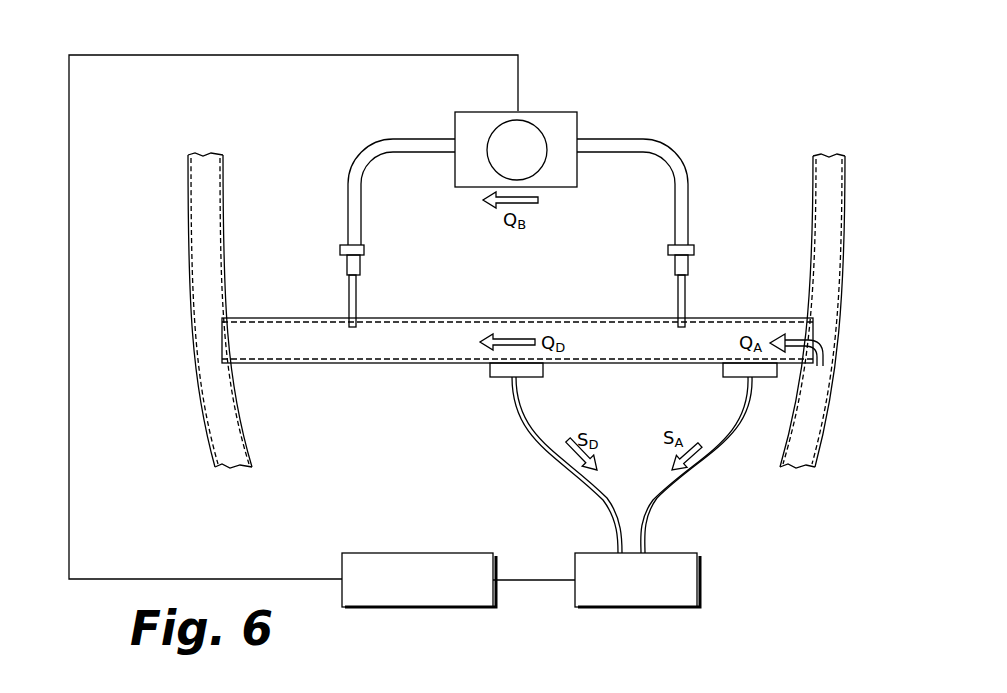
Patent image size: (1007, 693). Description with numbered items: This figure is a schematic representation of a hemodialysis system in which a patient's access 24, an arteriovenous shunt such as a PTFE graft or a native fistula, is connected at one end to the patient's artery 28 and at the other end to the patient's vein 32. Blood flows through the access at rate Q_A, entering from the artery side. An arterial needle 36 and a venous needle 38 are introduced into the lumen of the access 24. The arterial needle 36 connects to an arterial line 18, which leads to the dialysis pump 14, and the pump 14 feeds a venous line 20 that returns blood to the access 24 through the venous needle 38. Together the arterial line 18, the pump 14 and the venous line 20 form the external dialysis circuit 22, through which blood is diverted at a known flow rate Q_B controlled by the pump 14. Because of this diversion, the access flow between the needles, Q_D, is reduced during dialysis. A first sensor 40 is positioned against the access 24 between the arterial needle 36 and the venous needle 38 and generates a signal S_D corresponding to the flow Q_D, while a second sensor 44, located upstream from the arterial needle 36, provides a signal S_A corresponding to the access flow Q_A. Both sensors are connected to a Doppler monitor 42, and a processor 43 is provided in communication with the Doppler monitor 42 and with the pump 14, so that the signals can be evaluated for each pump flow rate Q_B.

The dialysis pump 14 is at (528, 111).
The external dialysis circuit 22 is at (656, 116).
The venous line 20 is at (368, 145).
The arterial line 18 is at (676, 150).
The artery 28 is at (808, 188).
The vein 32 is at (192, 390).
The venous needle 38 is at (358, 303).
The arterial needle 36 is at (677, 303).
The access 24 is at (380, 347).
The first sensor 40 is at (490, 372).
The second sensor 44 is at (718, 372).
The processor 43 is at (410, 552).
The Doppler monitor 42 is at (700, 588).